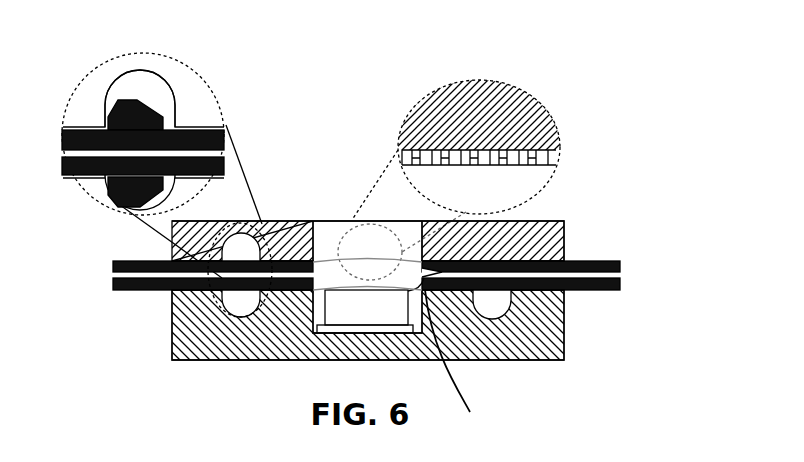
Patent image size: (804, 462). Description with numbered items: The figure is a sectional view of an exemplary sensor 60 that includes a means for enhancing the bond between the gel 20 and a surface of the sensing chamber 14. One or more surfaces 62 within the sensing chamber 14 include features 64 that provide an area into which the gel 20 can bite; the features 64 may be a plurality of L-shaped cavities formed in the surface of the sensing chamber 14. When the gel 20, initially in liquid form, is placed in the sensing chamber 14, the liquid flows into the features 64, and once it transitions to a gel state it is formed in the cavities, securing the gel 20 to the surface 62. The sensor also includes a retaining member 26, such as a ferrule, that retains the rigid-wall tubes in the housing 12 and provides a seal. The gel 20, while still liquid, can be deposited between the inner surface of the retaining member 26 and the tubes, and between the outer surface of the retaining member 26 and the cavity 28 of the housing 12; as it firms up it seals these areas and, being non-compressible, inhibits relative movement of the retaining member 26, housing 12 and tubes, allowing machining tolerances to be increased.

The housing 12 is at (165, 333).
The sensing chamber 14 is at (310, 318).
The gel 20 is at (152, 97).
The retaining member 26 is at (112, 107).
The cavity 28 is at (158, 72).
The sensor 60 is at (627, 139).
The surface 62 is at (345, 242).
The features 64 is at (405, 157).